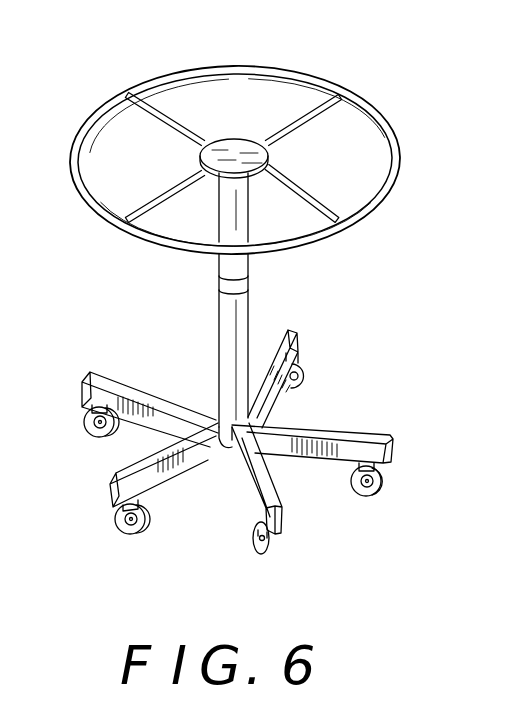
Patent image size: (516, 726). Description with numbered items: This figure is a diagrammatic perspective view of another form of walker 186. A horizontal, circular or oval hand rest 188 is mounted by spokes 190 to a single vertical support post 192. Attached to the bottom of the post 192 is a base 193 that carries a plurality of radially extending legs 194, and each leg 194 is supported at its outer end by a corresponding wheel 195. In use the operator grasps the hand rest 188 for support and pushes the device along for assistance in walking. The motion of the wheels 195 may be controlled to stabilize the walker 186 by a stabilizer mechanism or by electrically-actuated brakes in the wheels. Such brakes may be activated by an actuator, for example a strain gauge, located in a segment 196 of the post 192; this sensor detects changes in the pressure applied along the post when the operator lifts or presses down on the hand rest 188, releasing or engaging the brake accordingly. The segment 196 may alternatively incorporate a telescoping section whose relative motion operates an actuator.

The walker 186 is at (265, 131).
The hand rest 188 is at (389, 168).
The spokes 190 is at (302, 108).
The vertical support post 192 is at (250, 320).
The base 193 is at (212, 440).
The legs 194 is at (328, 432).
The wheels 195 is at (262, 554).
The segment of the post 196 is at (207, 283).